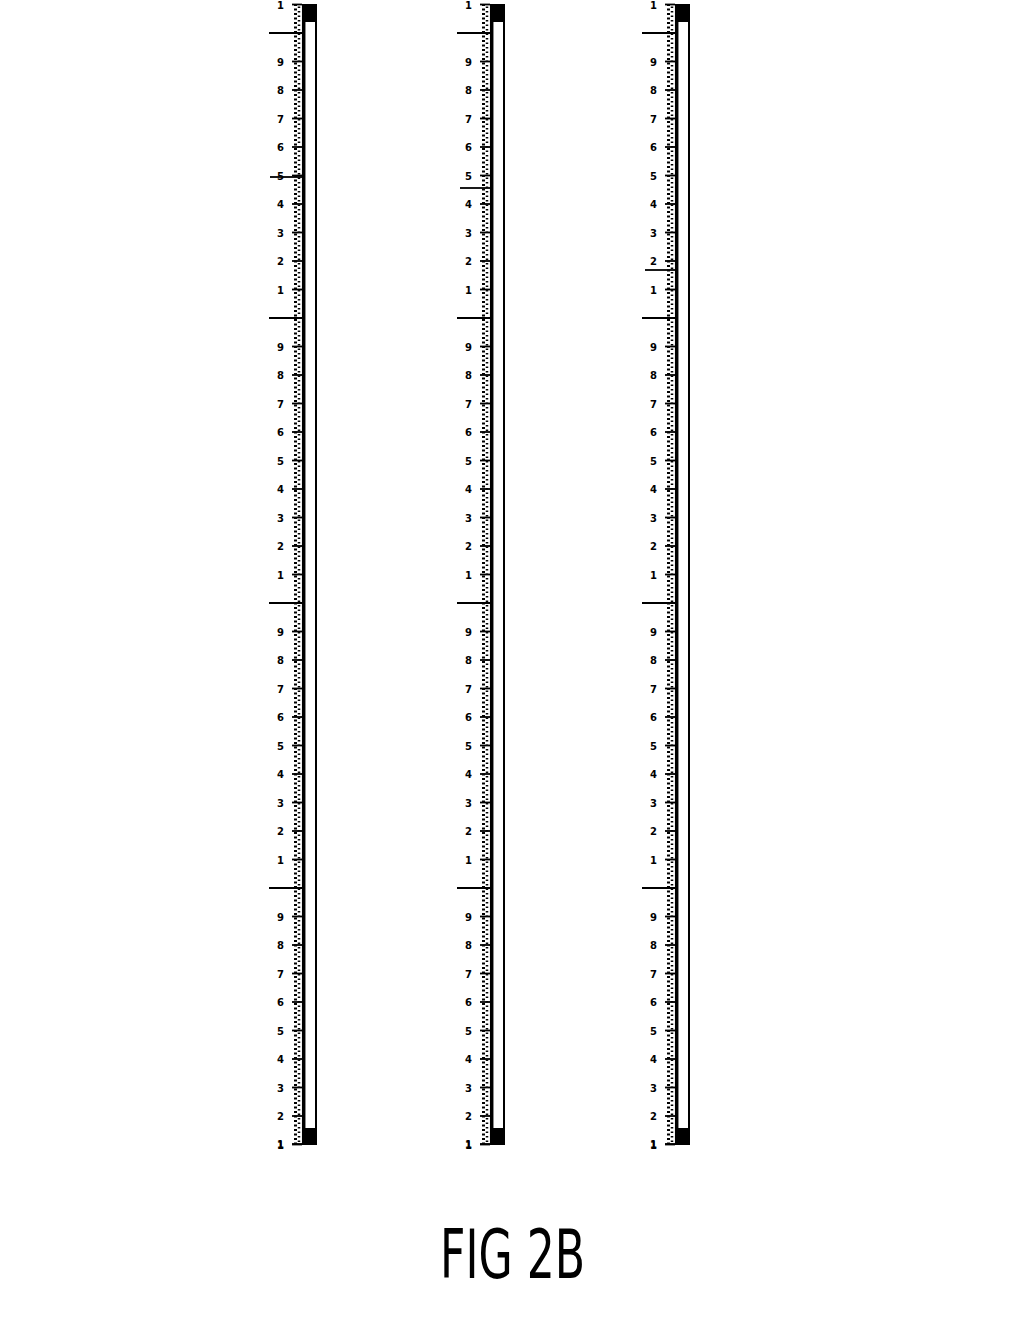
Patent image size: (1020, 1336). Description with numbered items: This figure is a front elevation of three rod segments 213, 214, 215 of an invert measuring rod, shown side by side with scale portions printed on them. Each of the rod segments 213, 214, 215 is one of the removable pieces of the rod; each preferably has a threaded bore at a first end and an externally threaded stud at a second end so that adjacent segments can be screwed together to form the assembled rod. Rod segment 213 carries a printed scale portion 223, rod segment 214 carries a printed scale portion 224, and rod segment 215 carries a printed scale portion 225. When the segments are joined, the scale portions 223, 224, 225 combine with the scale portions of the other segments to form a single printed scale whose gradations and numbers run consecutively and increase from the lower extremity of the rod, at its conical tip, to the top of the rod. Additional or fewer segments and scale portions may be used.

The rod segment 213 is at (227, 575).
The rod segment 214 is at (475, 575).
The rod segment 215 is at (728, 575).
The printed scale portion 223 is at (290, 179).
The printed scale portion 224 is at (478, 188).
The printed scale portion 225 is at (660, 274).